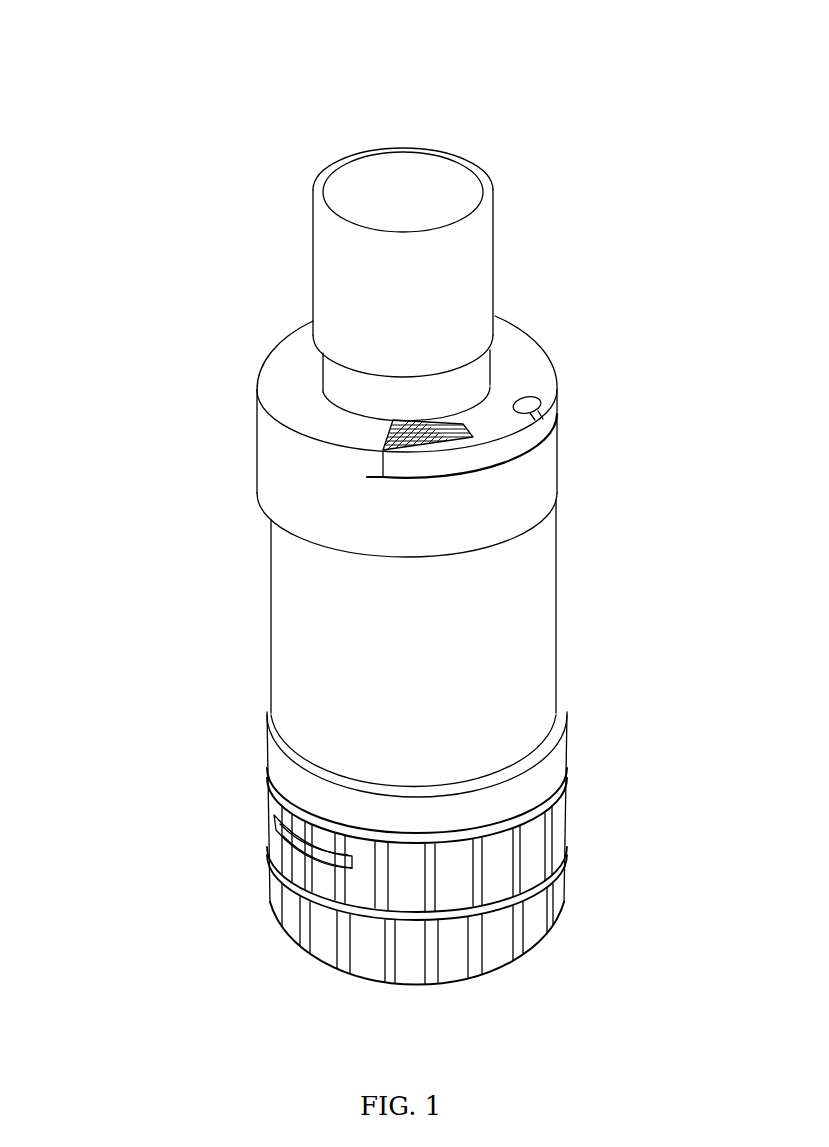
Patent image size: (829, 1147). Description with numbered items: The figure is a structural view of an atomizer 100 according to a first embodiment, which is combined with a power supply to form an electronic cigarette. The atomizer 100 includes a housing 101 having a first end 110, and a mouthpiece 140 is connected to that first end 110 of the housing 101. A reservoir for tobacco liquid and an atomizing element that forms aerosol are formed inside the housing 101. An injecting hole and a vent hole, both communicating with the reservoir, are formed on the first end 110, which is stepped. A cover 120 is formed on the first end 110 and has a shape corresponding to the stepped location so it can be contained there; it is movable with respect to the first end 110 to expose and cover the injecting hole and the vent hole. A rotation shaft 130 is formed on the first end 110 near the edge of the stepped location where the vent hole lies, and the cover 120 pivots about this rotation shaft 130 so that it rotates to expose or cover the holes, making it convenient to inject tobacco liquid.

The atomizer 100 is at (455, 53).
The housing 101 is at (317, 629).
The first end 110 is at (297, 473).
The cover 120 is at (520, 477).
The rotation shaft 130 is at (543, 396).
The mouthpiece 140 is at (367, 284).